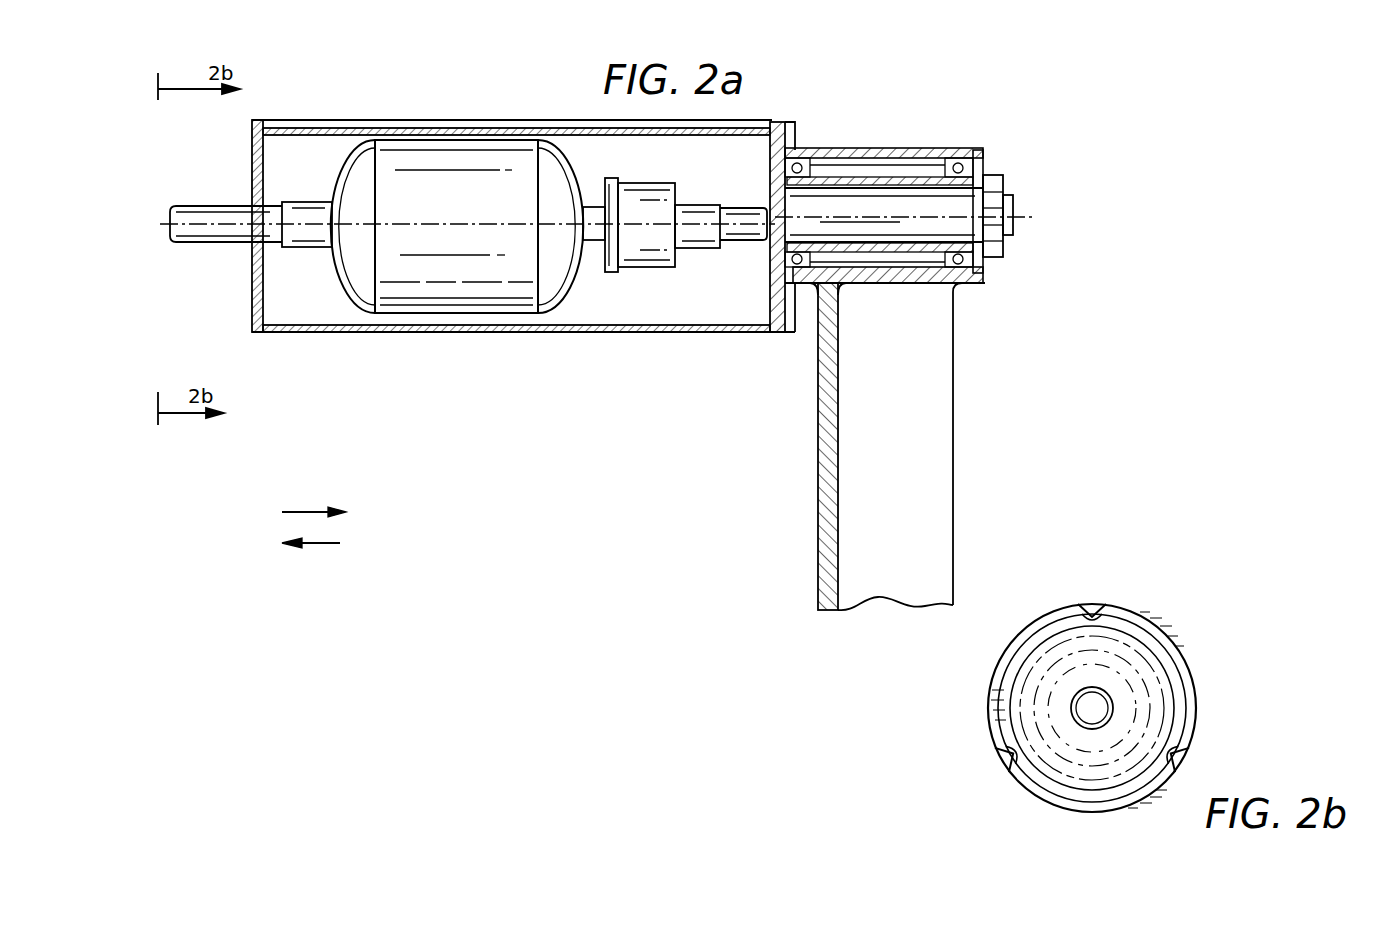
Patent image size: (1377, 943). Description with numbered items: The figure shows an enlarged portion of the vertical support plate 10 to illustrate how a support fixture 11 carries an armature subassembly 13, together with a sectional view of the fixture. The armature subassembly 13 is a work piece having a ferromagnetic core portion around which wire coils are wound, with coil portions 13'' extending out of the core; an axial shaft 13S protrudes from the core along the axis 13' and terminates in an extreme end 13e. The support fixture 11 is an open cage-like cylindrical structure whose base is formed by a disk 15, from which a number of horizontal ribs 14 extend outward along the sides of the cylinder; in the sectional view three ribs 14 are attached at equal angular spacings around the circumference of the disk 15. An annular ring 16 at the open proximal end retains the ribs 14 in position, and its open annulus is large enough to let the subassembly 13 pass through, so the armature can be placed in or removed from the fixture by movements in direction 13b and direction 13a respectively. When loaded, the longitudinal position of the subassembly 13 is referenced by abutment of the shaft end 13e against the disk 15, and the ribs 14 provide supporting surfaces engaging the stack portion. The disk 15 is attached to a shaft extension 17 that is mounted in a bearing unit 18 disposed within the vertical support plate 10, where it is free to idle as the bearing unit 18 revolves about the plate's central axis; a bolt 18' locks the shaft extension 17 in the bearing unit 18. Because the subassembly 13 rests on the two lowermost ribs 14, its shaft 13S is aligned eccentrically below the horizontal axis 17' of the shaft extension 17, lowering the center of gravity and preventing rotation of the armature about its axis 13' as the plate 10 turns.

In FIG. 2a, the vertical support plate 10 is at (942, 490).
In FIG. 2a, the support fixture 11 is at (778, 98).
In FIG. 2a, the armature subassembly 13 is at (456, 260).
In FIG. 2a, the axis of armature subassembly 13' is at (391, 226).
In FIG. 2a, the wire coil portions 13'' is at (588, 229).
In FIG. 2a, the axial shaft 13S is at (216, 238).
In FIG. 2b, the axial shaft 13S is at (1120, 712).
In FIG. 2a, the extreme end of shaft 13e is at (770, 248).
In FIG. 2a, the removal direction 13a is at (306, 545).
In FIG. 2a, the placement direction 13b is at (314, 502).
In FIG. 2a, the horizontal ribs 14 is at (507, 130).
In FIG. 2b, the horizontal ribs 14 is at (1095, 603).
In FIG. 2a, the disk 15 is at (790, 124).
In FIG. 2a, the annular ring 16 is at (255, 160).
In FIG. 2b, the annular ring 16 is at (1172, 656).
In FIG. 2a, the shaft extension 17 is at (884, 174).
In FIG. 2a, the horizontal axis of shaft extension 17' is at (879, 237).
In FIG. 2a, the bearing unit 18 is at (911, 339).
In FIG. 2a, the bolt 18' is at (1019, 186).